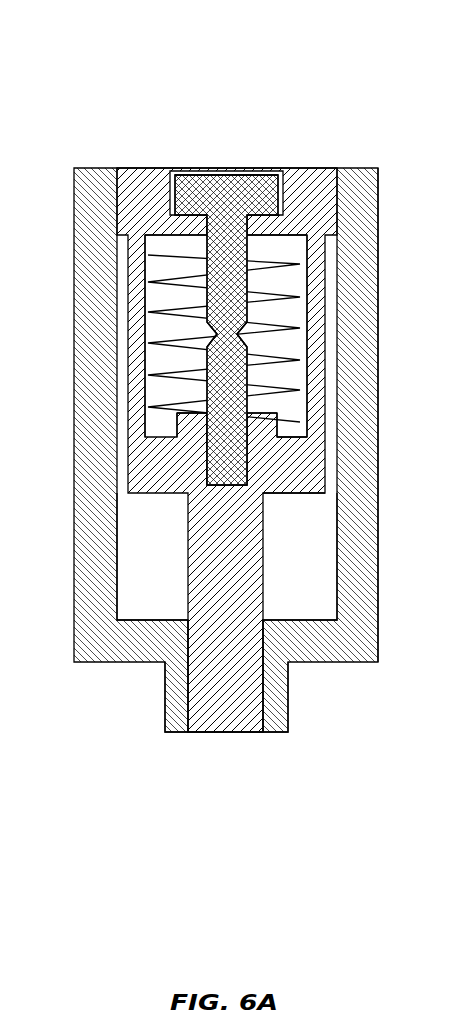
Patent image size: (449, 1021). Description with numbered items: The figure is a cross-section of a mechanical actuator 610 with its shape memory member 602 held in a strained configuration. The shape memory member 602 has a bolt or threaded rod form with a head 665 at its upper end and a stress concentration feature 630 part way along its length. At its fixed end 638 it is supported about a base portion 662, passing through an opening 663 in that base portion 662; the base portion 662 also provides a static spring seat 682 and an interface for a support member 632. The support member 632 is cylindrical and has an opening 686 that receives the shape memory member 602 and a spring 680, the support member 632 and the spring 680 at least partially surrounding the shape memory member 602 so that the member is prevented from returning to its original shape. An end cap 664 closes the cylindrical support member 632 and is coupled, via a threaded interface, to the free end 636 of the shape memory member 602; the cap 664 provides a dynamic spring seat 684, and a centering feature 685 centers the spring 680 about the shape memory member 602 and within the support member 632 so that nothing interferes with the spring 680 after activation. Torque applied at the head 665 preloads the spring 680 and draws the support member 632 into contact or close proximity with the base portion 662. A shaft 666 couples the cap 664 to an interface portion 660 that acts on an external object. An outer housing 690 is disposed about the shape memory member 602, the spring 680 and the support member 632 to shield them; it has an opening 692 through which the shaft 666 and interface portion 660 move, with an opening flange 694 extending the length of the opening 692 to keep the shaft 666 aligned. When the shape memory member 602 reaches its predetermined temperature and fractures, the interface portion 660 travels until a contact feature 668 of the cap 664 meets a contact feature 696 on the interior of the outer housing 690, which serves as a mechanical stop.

The mechanical actuator 610 is at (128, 43).
The base portion 662 is at (315, 167).
The outer housing 690 is at (380, 551).
The end cap 664 is at (119, 472).
The spring 680 is at (177, 350).
The shape memory member 602 is at (247, 286).
The head 665 is at (266, 170).
The stress concentration feature 630 is at (251, 341).
The static spring seat 682 is at (165, 236).
The opening 663 is at (202, 240).
The opening 686 is at (150, 326).
The centering feature 685 is at (176, 427).
The fixed end 638 is at (252, 246).
The support member 632 is at (320, 359).
The free end 636 is at (254, 407).
The dynamic spring seat 684 is at (290, 436).
The contact feature 668 is at (300, 494).
The shaft 666 is at (188, 562).
The contact feature 696 is at (297, 619).
The opening flange 694 is at (289, 700).
The opening 692 is at (187, 746).
The interface portion 660 is at (250, 758).